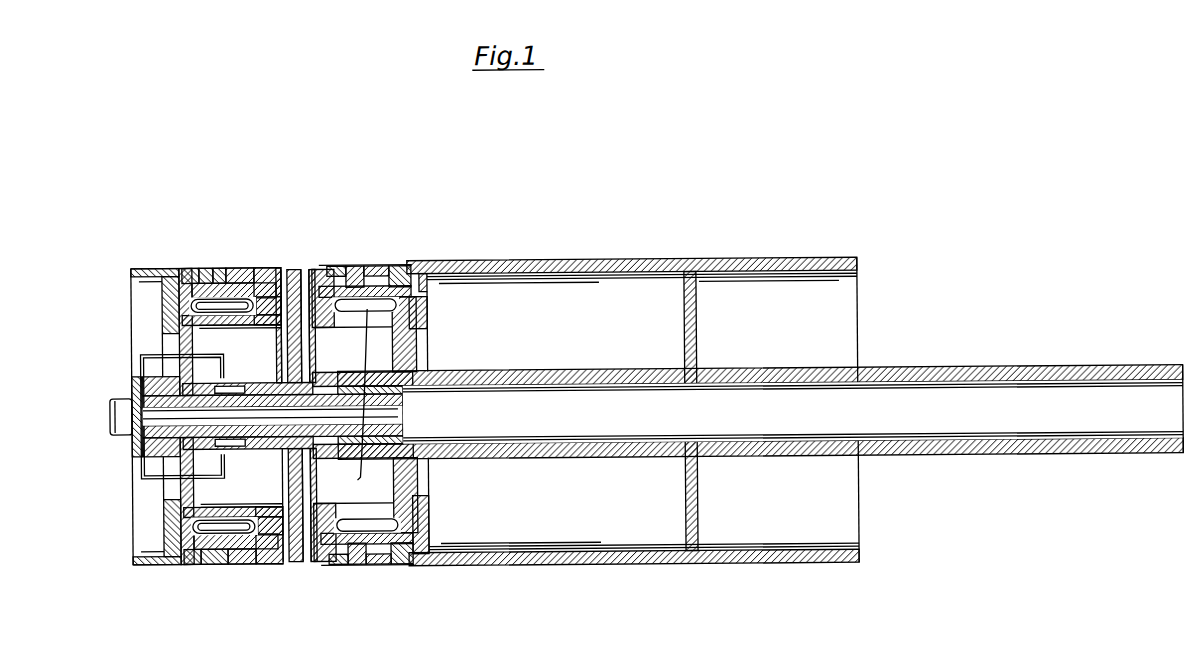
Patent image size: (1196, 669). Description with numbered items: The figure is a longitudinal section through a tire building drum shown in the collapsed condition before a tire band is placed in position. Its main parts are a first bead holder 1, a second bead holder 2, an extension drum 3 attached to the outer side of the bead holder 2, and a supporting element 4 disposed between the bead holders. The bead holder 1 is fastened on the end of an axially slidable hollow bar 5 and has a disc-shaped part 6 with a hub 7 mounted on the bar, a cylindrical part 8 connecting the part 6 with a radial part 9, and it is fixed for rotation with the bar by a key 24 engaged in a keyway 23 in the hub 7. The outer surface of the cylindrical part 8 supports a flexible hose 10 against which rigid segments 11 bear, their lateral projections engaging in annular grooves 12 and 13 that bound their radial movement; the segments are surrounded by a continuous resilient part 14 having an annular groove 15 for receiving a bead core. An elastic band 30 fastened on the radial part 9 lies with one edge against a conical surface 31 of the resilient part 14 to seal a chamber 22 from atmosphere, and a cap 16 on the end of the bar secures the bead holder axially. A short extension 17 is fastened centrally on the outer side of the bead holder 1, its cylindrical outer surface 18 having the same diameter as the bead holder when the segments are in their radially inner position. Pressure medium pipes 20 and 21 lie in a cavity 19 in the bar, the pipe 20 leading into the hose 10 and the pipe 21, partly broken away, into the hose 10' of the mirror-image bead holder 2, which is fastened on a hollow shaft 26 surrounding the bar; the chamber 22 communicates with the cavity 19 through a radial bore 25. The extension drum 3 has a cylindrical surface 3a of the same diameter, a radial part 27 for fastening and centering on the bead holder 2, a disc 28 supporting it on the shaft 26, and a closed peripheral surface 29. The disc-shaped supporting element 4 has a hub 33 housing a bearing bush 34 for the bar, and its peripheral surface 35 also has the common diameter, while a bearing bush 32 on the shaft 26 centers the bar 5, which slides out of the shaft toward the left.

The first bead holder 1 is at (228, 252).
The second bead holder 2 is at (397, 368).
The extension drum 3 is at (483, 252).
The cylindrical surface 3a is at (533, 568).
The supporting element 4 is at (295, 252).
The hollow bar 5 is at (528, 415).
The disc-shaped part 6 is at (185, 343).
The hub 7 is at (228, 374).
The cylindrical part 8 is at (219, 250).
The radial part 9 is at (277, 266).
The flexible hose 10 is at (131, 332).
The flexible hose 10' is at (417, 251).
The rigid segments 11 is at (157, 229).
The annular groove 12 is at (267, 264).
The annular groove 13 is at (132, 268).
The resilient part 14 is at (197, 265).
The annular groove 15 is at (215, 265).
The cap 16 is at (138, 388).
The extension 17 is at (155, 562).
The cylindrical outer surface 18 is at (172, 568).
The cavity 19 is at (400, 417).
The pressure medium pipe 20 is at (143, 435).
The pressure medium pipe 21 is at (145, 370).
The chamber 22 is at (224, 348).
The keyway 23 is at (255, 376).
The key 24 is at (145, 452).
The radial bore 25 is at (162, 475).
The hollow shaft 26 is at (485, 377).
The radial part 27 is at (423, 517).
The disc 28 is at (687, 312).
The peripheral surface 29 is at (582, 568).
The elastic band 30 is at (270, 568).
The conical surface 31 is at (297, 568).
The bearing bush 32 is at (373, 404).
The hub 33 is at (310, 392).
The bearing bush 34 is at (362, 402).
The peripheral surface 35 is at (305, 266).